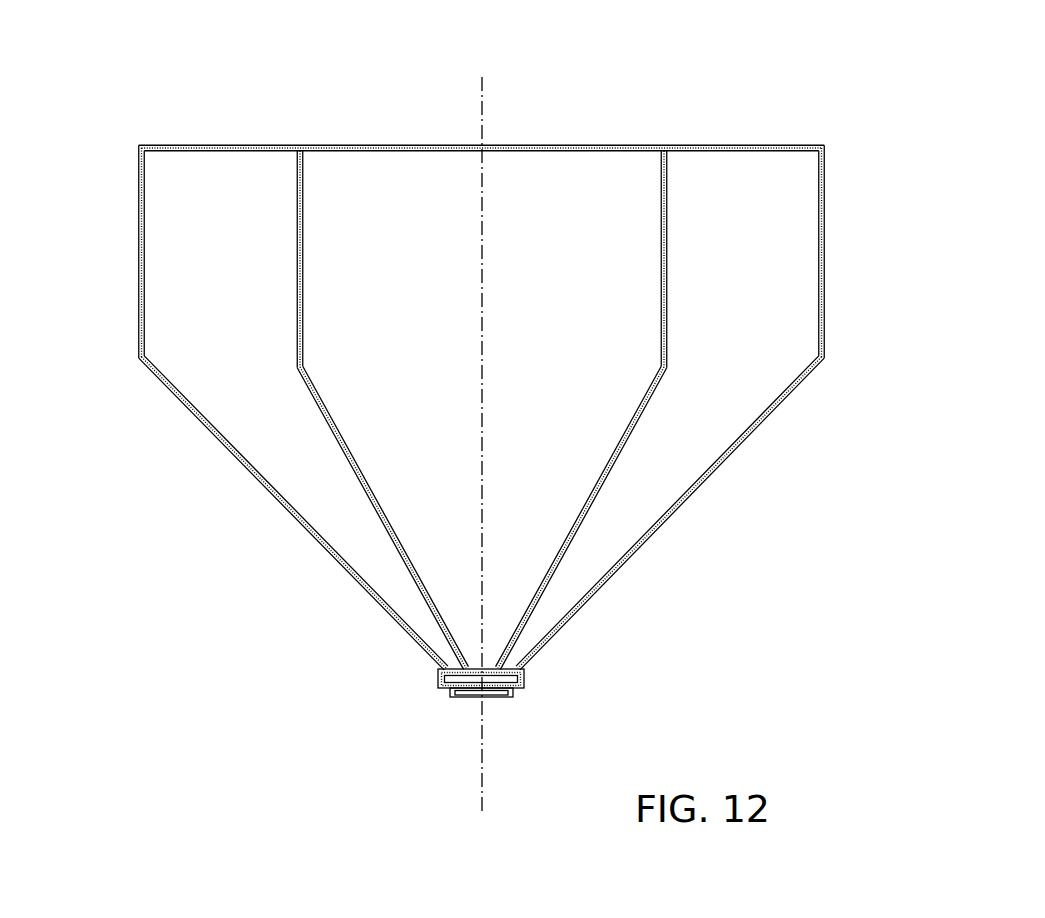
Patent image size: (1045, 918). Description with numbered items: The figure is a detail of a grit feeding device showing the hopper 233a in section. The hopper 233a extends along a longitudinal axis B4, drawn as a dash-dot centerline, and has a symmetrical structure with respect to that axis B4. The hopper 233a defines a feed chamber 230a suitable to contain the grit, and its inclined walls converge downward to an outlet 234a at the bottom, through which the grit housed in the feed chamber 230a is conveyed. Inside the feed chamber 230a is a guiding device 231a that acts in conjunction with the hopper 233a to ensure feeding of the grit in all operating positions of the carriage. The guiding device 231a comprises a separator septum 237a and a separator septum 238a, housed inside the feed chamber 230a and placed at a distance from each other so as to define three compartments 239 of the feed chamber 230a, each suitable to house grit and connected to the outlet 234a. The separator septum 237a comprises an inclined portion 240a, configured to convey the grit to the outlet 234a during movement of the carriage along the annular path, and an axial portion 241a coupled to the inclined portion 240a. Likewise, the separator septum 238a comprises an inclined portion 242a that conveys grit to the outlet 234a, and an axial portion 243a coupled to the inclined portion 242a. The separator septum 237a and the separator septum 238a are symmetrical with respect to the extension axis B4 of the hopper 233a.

The feed chamber 230a is at (540, 182).
The guiding device 231a is at (230, 490).
The hopper 233a is at (893, 340).
The outlet 234a is at (492, 705).
The separator septum 237a is at (668, 190).
The separator septum 238a is at (307, 205).
The compartments 239 is at (617, 213).
The inclined portion 240a is at (605, 473).
The axial portion 241a is at (664, 313).
The inclined portion 242a is at (383, 520).
The axial portion 243a is at (297, 268).
The longitudinal axis B4 is at (482, 797).